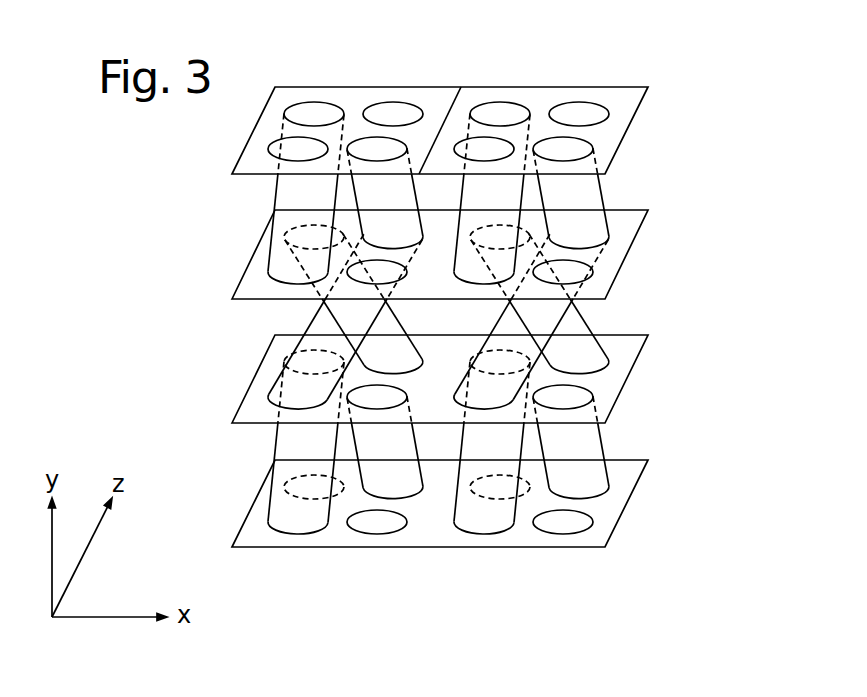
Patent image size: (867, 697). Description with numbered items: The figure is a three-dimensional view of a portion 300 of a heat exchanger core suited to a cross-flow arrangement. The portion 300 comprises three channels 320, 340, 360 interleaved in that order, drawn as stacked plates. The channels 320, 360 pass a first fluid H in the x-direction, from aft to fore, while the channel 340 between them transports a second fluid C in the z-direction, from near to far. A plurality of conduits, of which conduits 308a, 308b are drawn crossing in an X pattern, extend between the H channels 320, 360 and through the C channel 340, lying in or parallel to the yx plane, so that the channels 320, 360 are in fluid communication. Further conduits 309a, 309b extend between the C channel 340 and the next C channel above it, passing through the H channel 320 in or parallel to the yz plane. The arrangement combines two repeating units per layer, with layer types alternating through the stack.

The portion for a heat exchanger core 300 is at (704, 81).
The channel 320 is at (606, 192).
The channel 340 is at (602, 320).
The channel 360 is at (611, 445).
The conduit 309a is at (278, 190).
The conduit 309b is at (381, 188).
The conduit 308a is at (288, 380).
The conduit 308b is at (383, 332).